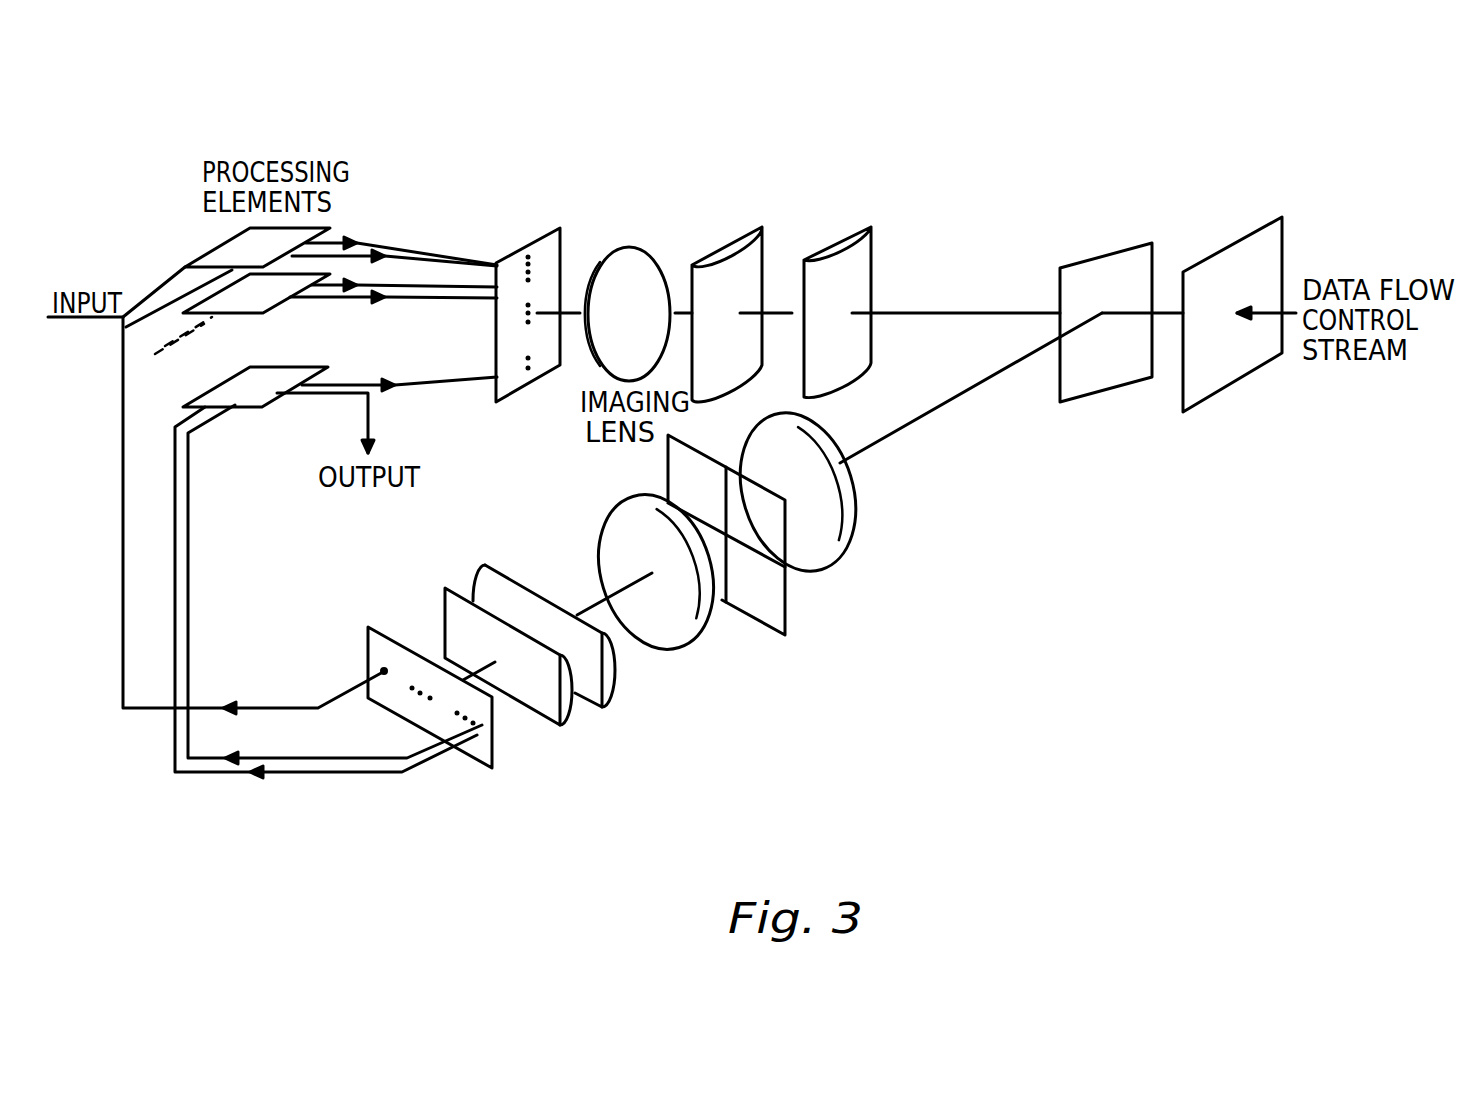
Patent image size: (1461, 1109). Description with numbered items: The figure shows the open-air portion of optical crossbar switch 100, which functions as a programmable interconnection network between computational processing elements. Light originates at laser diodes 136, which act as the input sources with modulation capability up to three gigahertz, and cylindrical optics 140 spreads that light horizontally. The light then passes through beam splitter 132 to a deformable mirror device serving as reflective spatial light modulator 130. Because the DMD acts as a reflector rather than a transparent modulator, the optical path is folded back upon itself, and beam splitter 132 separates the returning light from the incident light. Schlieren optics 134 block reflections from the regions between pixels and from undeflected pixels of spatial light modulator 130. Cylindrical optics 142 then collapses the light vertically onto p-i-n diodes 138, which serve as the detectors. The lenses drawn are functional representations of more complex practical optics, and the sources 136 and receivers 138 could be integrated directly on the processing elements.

The optical crossbar switch 100 is at (1150, 716).
The deformable mirror device (DMD) spatial light modulator 130 is at (1228, 430).
The beam splitter 132 is at (1103, 258).
The schlieren optics 134 is at (885, 578).
The laser diodes 136 is at (557, 230).
The p-i-n diodes 138 is at (477, 761).
The cylindrical optics 140 is at (878, 218).
The cylindrical optics 142 is at (667, 704).